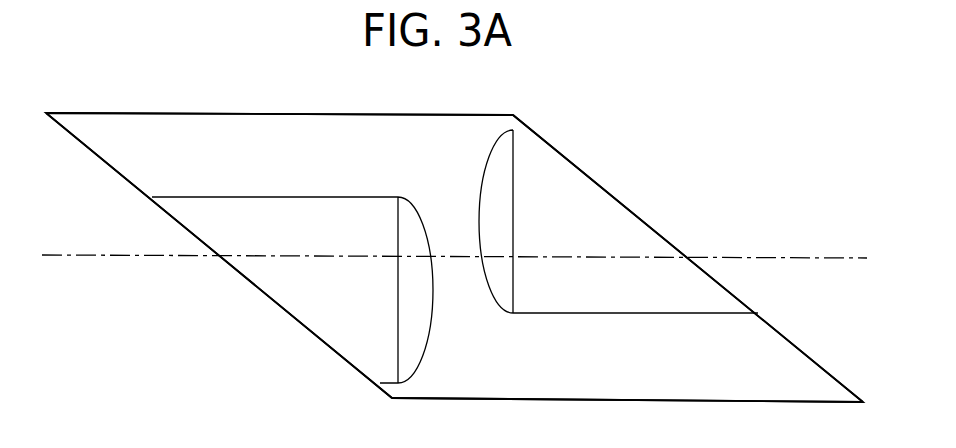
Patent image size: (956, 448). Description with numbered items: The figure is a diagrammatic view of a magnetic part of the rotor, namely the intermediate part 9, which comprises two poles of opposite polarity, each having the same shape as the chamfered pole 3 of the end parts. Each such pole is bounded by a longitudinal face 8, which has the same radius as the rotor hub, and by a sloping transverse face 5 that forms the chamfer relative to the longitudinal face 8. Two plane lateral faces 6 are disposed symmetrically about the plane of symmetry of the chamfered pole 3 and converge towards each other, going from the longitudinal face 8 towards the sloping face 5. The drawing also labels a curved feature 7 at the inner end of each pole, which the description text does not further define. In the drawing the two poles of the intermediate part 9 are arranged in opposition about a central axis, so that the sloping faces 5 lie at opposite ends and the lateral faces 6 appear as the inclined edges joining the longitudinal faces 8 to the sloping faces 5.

The chamfered pole 3 is at (89, 100).
The sloping transverse face 5 is at (110, 163).
The plane lateral faces 6 is at (297, 290).
The semicircular recess 7 is at (408, 343).
The longitudinal face 8 is at (170, 112).
The intermediate part 9 is at (311, 100).